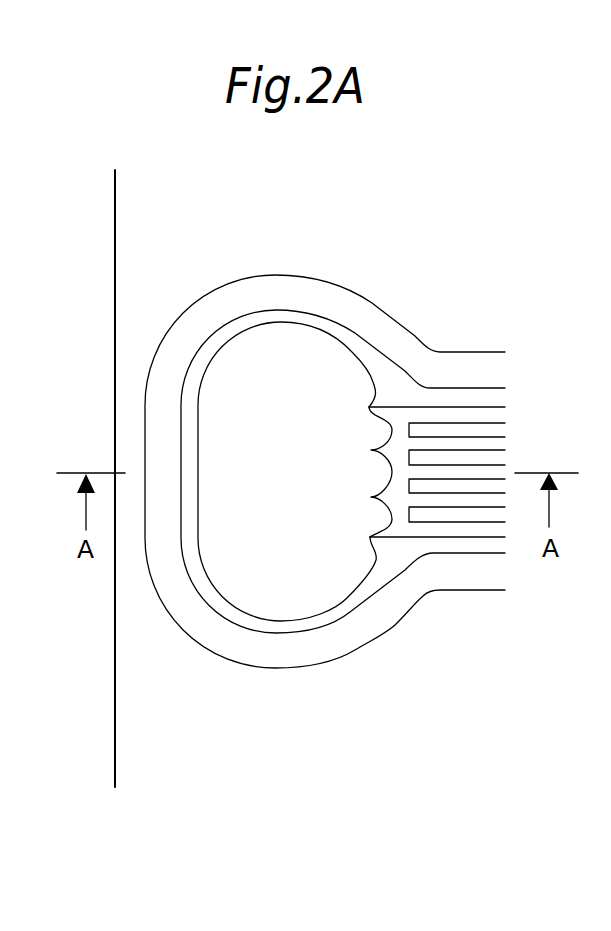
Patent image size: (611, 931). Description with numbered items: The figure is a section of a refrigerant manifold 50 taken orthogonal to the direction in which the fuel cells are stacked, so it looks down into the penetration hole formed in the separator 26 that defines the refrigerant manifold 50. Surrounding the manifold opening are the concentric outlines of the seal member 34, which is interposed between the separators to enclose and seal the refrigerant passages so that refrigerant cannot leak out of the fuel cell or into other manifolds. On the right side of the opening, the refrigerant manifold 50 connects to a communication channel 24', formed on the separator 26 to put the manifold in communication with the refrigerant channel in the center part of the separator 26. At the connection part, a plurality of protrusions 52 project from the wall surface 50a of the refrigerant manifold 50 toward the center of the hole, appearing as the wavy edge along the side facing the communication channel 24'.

The separator 26 is at (311, 236).
The seal member 34 is at (242, 645).
The refrigerant manifold 50 is at (345, 447).
The wall surface 50a is at (321, 335).
The protrusions 52 is at (370, 451).
The communication channel 24' is at (493, 470).